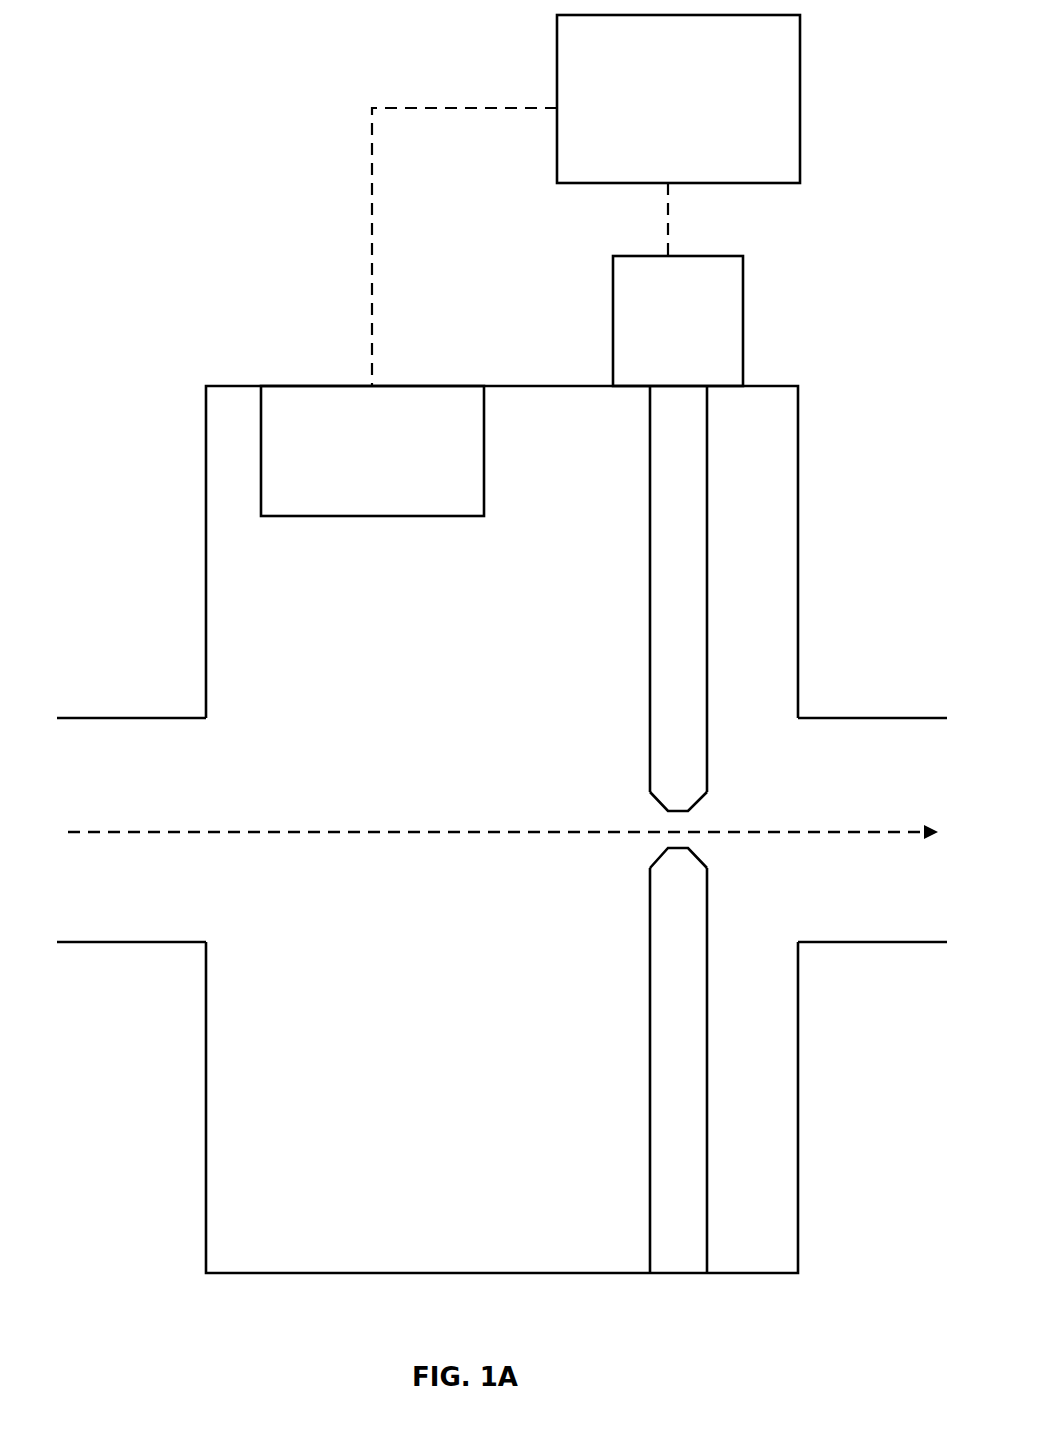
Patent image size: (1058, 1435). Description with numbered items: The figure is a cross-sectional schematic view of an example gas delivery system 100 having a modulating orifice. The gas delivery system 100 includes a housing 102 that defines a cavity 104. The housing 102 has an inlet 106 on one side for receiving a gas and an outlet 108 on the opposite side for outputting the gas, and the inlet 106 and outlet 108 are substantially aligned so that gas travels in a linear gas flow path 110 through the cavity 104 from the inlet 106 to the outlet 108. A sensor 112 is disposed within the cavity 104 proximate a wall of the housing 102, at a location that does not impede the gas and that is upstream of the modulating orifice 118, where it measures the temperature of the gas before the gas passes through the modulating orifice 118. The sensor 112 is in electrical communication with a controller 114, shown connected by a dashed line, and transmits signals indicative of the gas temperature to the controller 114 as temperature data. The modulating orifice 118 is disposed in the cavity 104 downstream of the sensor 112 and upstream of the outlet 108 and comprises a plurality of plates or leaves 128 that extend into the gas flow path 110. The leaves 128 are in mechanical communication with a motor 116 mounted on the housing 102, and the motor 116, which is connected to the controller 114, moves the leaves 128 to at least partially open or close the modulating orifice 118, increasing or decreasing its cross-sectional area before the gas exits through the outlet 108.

The gas delivery system 100 is at (230, 225).
The housing 102 is at (206, 473).
The cavity 104 is at (320, 1203).
The inlet 106 is at (87, 718).
The outlet 108 is at (875, 718).
The gas flow path 110 is at (322, 832).
The sensor 112 is at (372, 451).
The controller 114 is at (586, 200).
The motor 116 is at (678, 321).
The modulating orifice 118 is at (650, 843).
The leaves 128 is at (619, 829).